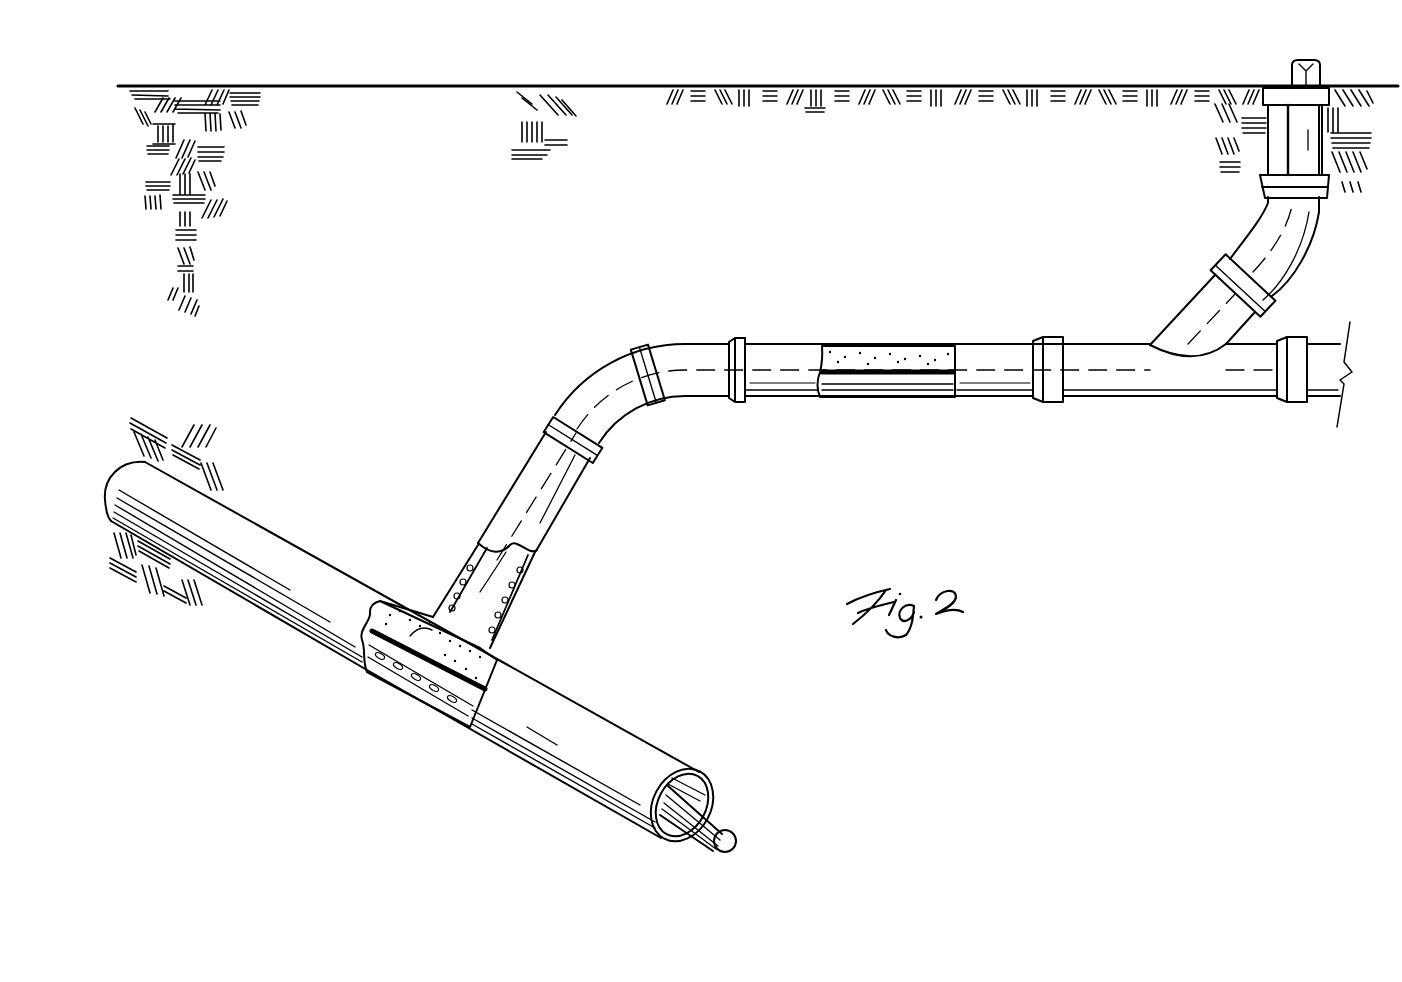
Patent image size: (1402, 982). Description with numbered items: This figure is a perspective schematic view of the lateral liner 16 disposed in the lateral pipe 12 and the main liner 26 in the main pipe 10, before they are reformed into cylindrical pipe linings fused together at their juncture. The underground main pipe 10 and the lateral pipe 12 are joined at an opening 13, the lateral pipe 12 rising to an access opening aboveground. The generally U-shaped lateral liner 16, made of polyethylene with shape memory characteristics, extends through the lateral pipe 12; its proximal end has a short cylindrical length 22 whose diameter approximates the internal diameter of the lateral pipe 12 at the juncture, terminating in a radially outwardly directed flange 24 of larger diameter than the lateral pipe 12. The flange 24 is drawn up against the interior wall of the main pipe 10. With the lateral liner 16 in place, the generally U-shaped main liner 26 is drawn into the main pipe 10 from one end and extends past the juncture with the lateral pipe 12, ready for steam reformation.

The main pipe 10 is at (283, 540).
The lateral pipe 12 is at (612, 428).
The opening 13 is at (470, 624).
The lateral liner 16 is at (876, 366).
The short length 22 is at (480, 597).
The flange 24 is at (413, 604).
The main liner 26 is at (737, 818).